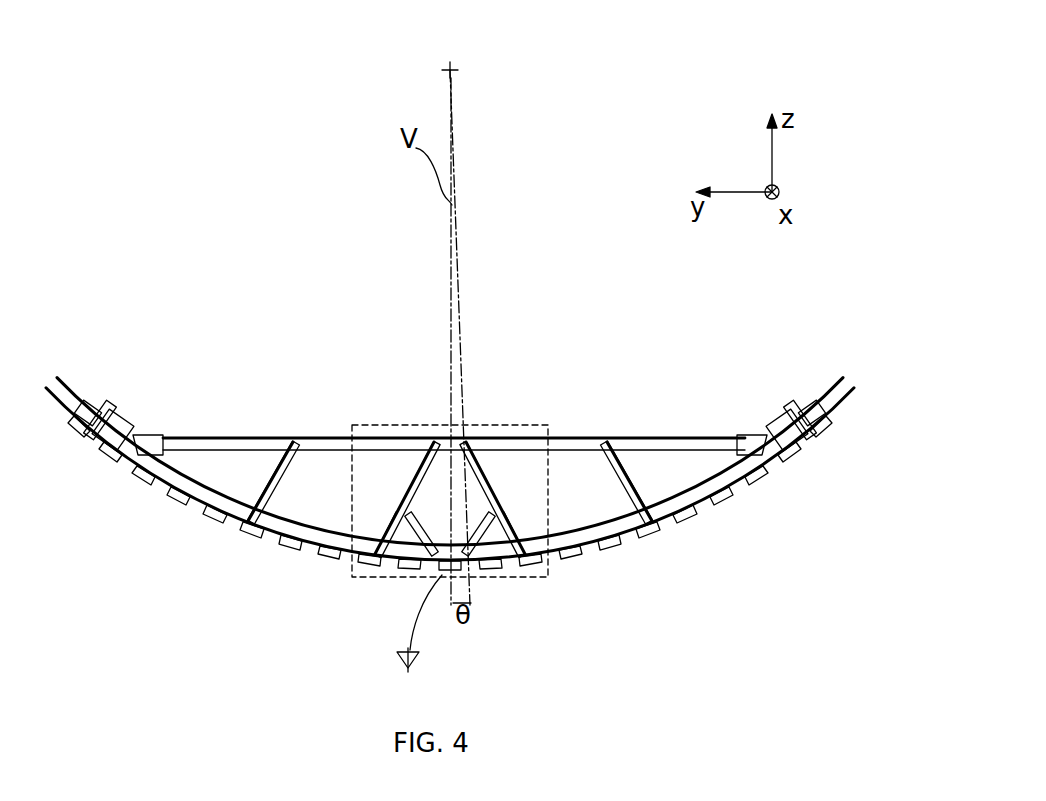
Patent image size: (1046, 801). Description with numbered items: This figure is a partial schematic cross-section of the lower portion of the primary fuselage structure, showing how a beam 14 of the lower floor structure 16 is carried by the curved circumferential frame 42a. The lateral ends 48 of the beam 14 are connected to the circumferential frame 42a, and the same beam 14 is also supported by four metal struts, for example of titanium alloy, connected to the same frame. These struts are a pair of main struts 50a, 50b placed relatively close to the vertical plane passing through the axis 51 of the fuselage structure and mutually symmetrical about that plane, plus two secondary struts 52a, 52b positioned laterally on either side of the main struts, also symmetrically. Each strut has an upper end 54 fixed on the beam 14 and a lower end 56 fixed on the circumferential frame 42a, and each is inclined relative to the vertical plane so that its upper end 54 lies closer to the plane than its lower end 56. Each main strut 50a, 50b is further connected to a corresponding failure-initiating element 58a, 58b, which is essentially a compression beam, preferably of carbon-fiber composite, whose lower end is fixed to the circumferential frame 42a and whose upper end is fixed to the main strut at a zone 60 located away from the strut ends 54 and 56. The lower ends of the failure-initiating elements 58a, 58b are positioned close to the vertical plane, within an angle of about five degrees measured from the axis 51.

The beam 14 is at (690, 437).
The lower floor structure 16 is at (213, 432).
The circumferential frame 42a is at (705, 495).
The lateral ends 48 is at (145, 436).
The main strut 50a is at (407, 472).
The main strut 50b is at (493, 472).
The axis 51 is at (460, 70).
The secondary strut 52a is at (257, 527).
The secondary strut 52b is at (628, 500).
The upper end 54 is at (441, 484).
The lower end 56 is at (240, 520).
The failure-initiating element 58a is at (403, 553).
The failure-initiating element 58b is at (484, 560).
The zone 60 is at (396, 512).